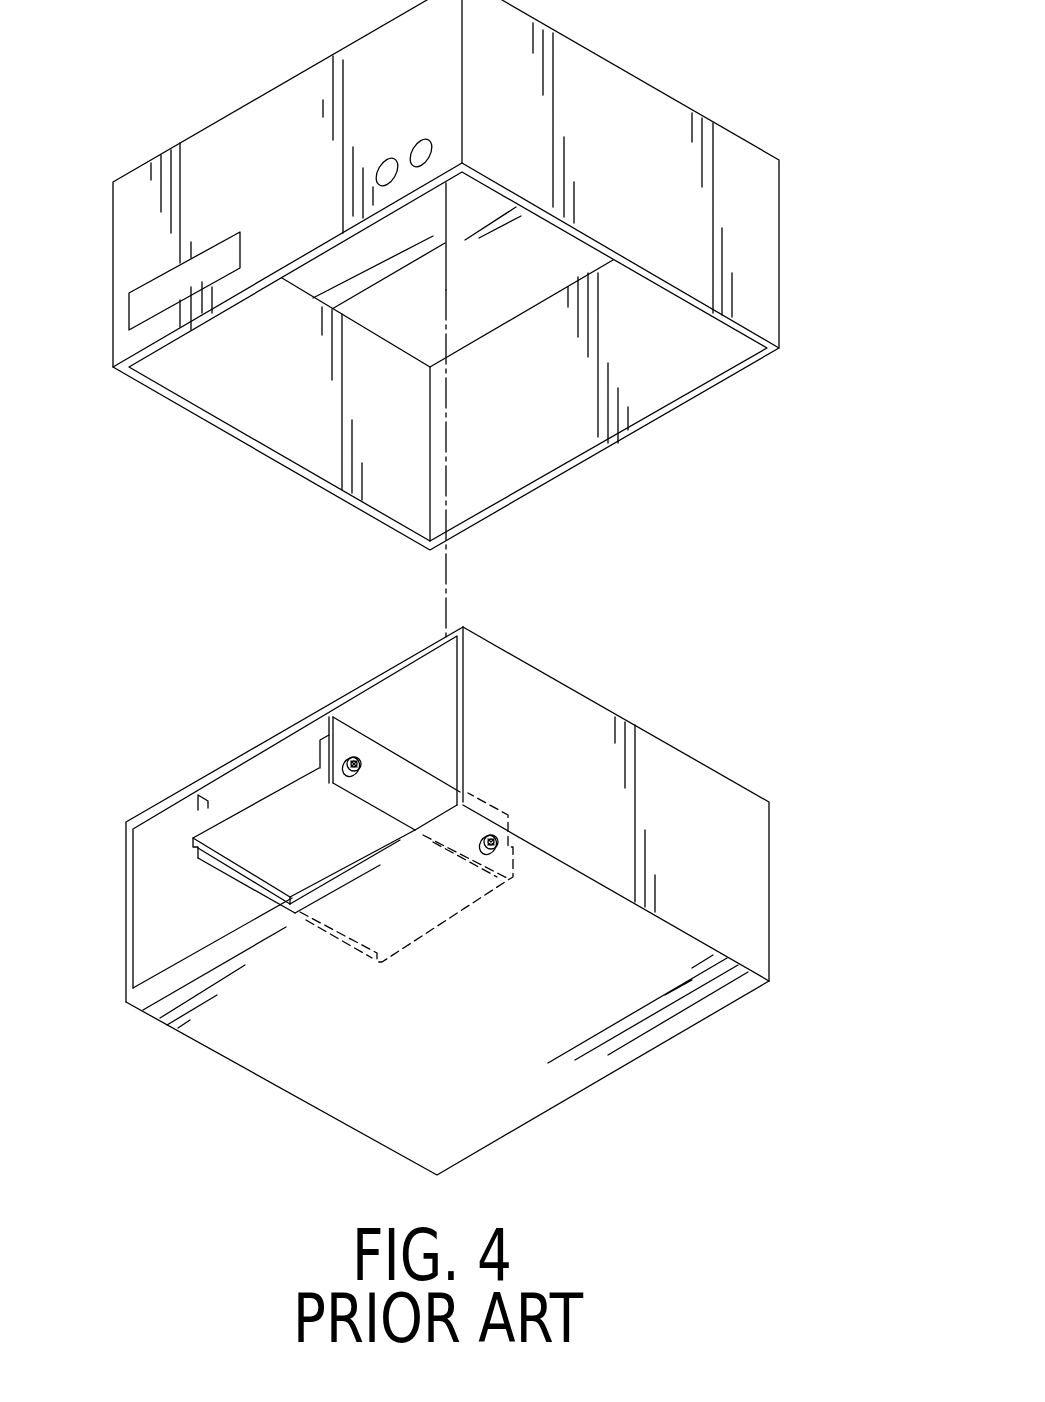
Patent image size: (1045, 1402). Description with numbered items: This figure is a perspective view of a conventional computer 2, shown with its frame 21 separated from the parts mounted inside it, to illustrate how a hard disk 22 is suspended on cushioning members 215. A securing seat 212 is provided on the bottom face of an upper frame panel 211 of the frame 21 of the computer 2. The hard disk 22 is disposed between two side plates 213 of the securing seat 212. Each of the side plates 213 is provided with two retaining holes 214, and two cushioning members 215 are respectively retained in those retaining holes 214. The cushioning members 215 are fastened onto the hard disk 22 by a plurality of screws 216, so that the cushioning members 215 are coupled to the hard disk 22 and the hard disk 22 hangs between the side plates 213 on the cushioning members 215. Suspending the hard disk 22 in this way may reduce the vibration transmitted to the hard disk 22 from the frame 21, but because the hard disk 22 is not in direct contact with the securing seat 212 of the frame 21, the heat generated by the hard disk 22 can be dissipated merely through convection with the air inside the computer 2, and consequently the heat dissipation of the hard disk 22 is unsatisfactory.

The computer 2 is at (822, 328).
The frame 21 is at (780, 780).
The upper frame panel 211 is at (243, 757).
The securing seat 212 is at (389, 716).
The side plates 213 is at (393, 772).
The retaining holes 214 is at (347, 760).
The cushioning members 215 is at (348, 758).
The screws 216 is at (358, 758).
The hard disk 22 is at (205, 820).